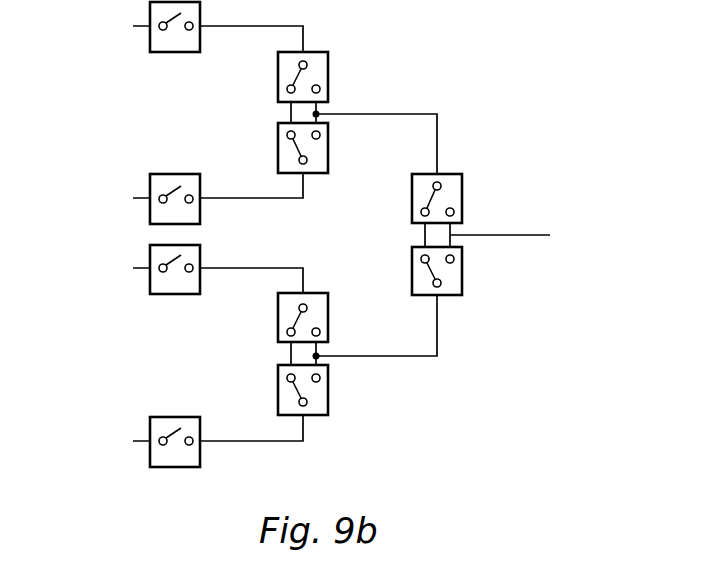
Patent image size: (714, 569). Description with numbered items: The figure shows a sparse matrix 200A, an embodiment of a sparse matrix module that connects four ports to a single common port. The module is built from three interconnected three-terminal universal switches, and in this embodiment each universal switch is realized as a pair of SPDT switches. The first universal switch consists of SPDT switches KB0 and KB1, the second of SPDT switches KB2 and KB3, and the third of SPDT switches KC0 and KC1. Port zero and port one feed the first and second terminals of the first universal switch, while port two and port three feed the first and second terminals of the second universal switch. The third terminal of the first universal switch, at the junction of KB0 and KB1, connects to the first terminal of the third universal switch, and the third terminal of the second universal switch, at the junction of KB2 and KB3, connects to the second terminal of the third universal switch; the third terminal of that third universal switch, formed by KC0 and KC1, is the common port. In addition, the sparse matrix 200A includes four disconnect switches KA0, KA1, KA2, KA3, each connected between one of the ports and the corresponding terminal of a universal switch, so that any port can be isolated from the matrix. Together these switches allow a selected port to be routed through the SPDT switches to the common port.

The sparse matrix 200A is at (472, 46).
The disconnect switch KA0 is at (175, 42).
The disconnect switch KA1 is at (175, 185).
The disconnect switch KA2 is at (175, 283).
The disconnect switch KA3 is at (175, 428).
The SPDT switch KB0 is at (327, 77).
The SPDT switch KB1 is at (327, 148).
The SPDT switch KB2 is at (327, 317).
The SPDT switch KB3 is at (327, 390).
The SPDT switch KC0 is at (460, 198).
The SPDT switch KC1 is at (460, 271).